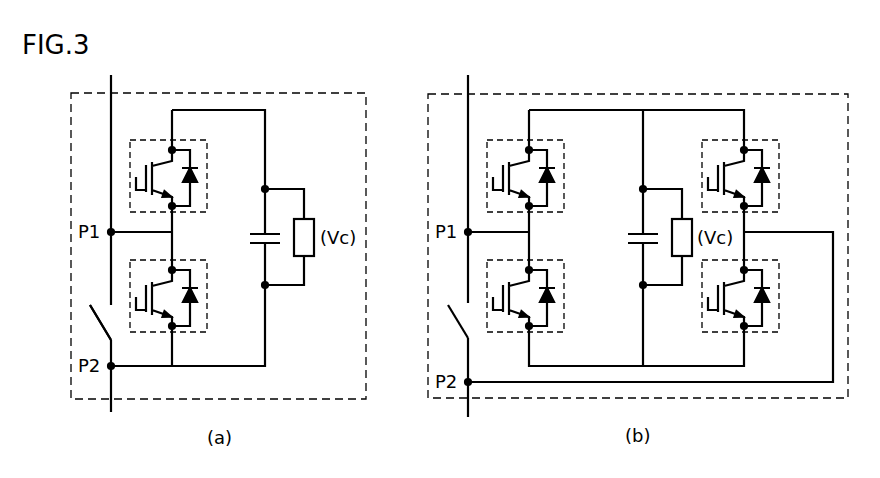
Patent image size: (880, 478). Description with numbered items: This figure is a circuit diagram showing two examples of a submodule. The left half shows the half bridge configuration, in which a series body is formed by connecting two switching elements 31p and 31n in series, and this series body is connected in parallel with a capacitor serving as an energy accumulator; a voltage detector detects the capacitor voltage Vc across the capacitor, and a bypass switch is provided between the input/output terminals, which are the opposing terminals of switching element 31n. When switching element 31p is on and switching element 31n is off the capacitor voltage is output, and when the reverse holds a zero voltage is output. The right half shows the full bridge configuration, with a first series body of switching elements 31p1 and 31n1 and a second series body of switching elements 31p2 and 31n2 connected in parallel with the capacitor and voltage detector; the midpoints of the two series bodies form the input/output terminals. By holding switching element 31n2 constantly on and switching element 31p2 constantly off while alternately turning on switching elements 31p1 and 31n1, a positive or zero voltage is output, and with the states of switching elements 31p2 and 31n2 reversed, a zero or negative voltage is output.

The switching element 31p is at (190, 140).
The switching element 31n is at (190, 260).
The switching element 31p1 is at (548, 139).
The switching element 31n1 is at (548, 261).
The switching element 31p2 is at (765, 139).
The switching element 31n2 is at (765, 262).